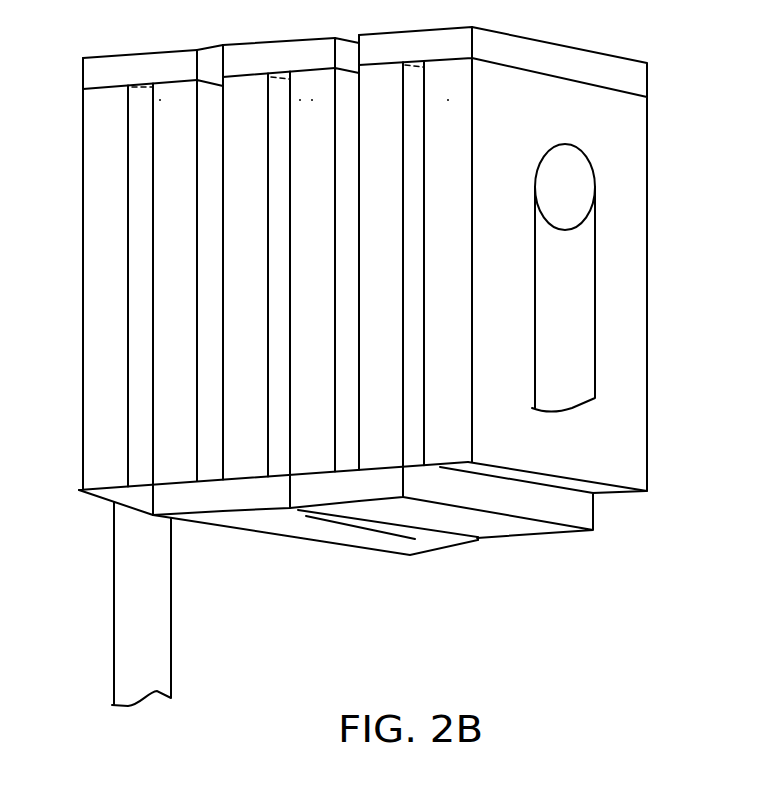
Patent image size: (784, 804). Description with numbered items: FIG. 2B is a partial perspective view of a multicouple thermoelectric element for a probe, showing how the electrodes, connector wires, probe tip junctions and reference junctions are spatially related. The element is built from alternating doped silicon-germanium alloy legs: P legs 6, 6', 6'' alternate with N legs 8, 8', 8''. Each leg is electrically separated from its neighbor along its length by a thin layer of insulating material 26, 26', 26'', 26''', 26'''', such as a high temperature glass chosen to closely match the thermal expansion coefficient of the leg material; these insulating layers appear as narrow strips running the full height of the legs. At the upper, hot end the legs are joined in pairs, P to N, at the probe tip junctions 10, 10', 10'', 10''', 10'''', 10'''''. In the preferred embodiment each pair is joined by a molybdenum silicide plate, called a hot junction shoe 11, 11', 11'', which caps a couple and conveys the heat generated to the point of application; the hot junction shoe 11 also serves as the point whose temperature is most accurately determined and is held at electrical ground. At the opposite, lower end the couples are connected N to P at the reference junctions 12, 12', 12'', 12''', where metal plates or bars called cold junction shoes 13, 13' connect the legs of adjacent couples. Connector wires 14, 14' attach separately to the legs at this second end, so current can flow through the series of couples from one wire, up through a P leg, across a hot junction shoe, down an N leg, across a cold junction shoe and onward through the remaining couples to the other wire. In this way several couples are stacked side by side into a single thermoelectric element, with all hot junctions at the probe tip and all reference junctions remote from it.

The probe tip junction 10 is at (247, 272).
The hot junction shoe 11 is at (140, 49).
The probe tip junction 10' is at (191, 244).
The probe tip junction 10'' is at (240, 244).
The hot junction shoe 11' is at (279, 38).
The probe tip junction 10''' is at (331, 239).
The probe tip junction 10'''' is at (373, 235).
The probe tip junction 10''''' is at (415, 231).
The hot junction shoe 11'' is at (557, 245).
The P leg 6 is at (112, 285).
The N leg 8 is at (171, 198).
The P leg 6' is at (251, 274).
The N leg 8' is at (308, 188).
The P leg 6'' is at (387, 264).
The N leg 8'' is at (450, 184).
The insulating material 26 is at (122, 284).
The insulating material 26' is at (225, 273).
The insulating material 26'' is at (325, 119).
The insulating material 26''' is at (321, 132).
The insulating material 26'''' is at (467, 263).
The reference junction 12 is at (151, 512).
The reference junction 12' is at (247, 518).
The reference junction 12'' is at (313, 527).
The reference junction 12''' is at (354, 531).
The cold junction shoe 13 is at (315, 550).
The cold junction shoe 13' is at (524, 518).
The connector wire 14 is at (117, 604).
The connector wire 14' is at (581, 277).